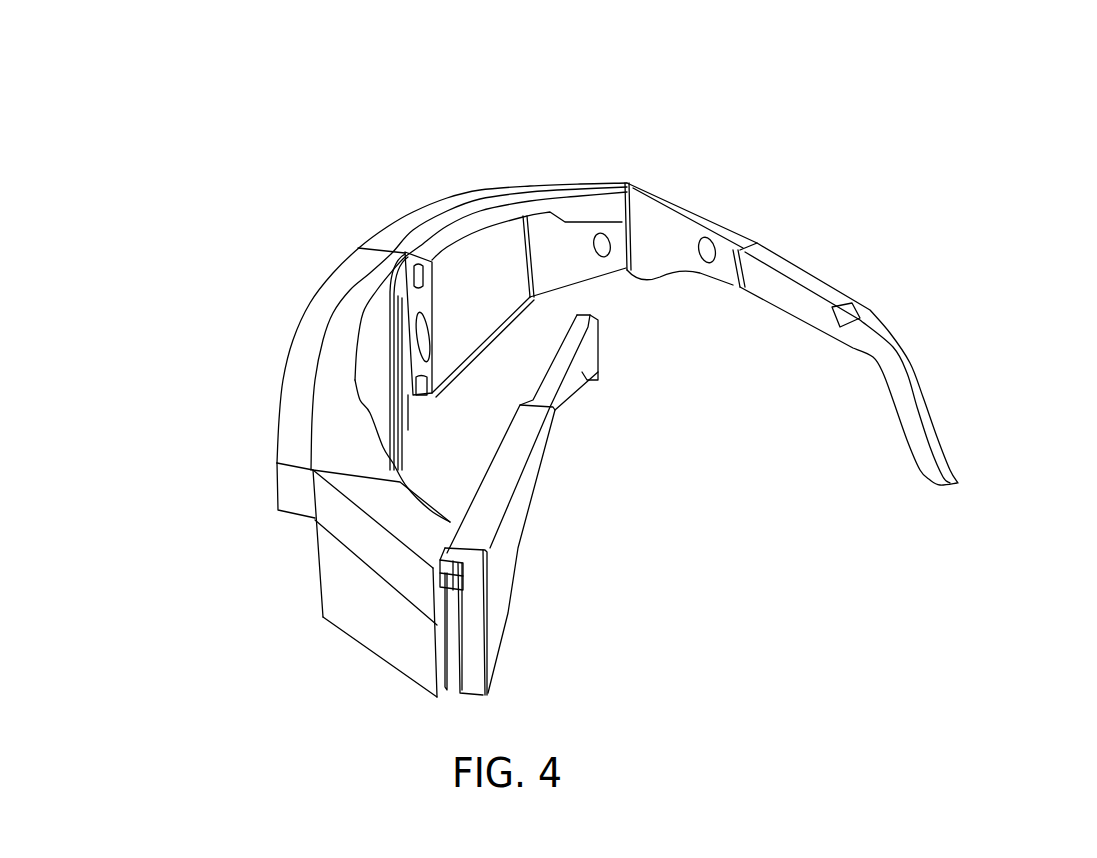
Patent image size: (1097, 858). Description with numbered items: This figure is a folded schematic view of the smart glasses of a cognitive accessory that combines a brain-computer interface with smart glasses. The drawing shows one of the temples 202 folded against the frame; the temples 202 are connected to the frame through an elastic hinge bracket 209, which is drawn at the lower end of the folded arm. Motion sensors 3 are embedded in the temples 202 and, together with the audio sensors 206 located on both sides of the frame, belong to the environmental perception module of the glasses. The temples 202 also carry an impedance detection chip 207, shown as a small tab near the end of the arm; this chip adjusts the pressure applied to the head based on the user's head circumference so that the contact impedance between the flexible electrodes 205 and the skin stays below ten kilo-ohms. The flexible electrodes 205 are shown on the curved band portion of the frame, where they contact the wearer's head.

The motion sensors 3 is at (705, 243).
The temples 202 is at (663, 230).
The flexible electrodes 205 is at (397, 290).
The audio sensors 206 is at (600, 238).
The impedance detection chip 207 is at (843, 305).
The elastic hinge bracket 209 is at (447, 572).